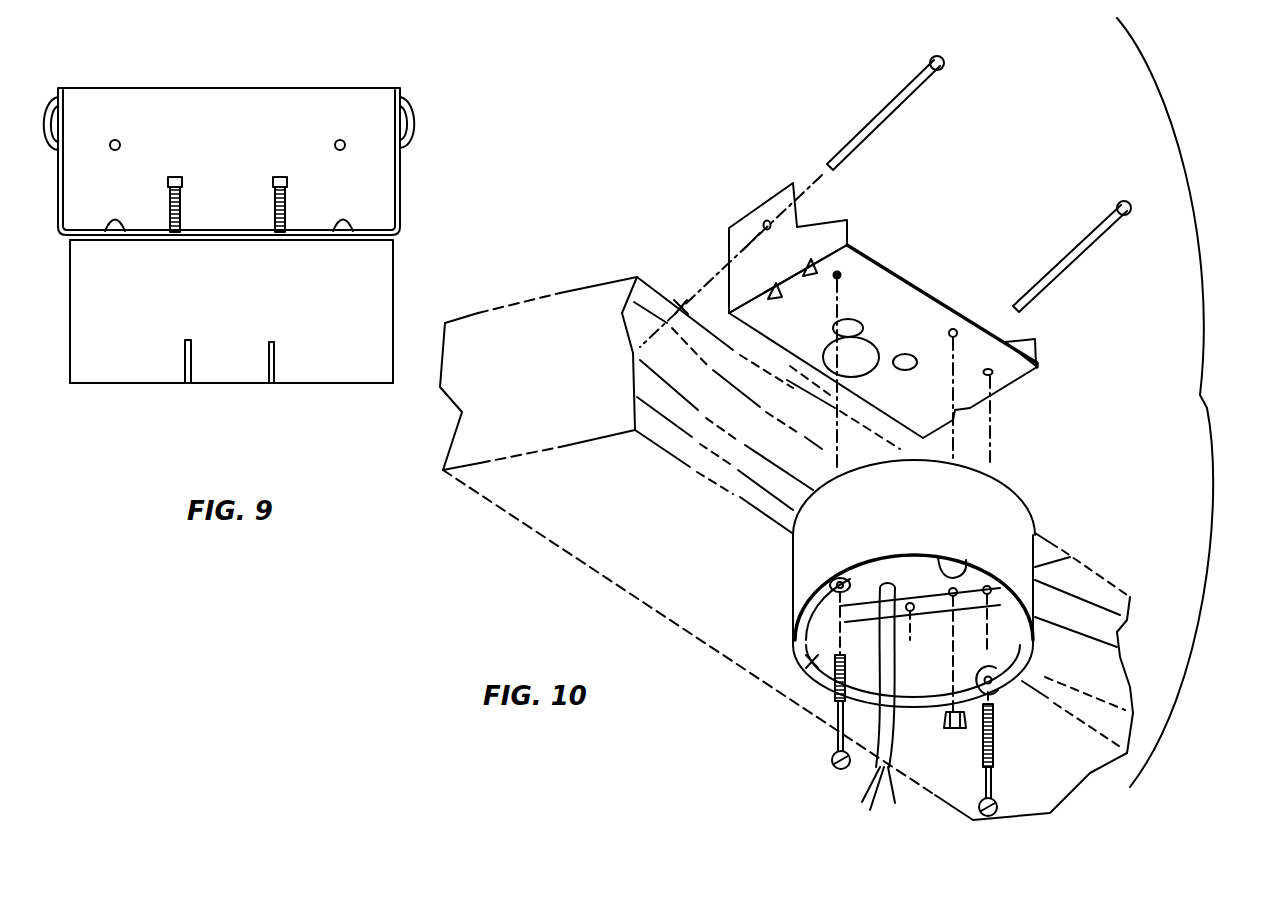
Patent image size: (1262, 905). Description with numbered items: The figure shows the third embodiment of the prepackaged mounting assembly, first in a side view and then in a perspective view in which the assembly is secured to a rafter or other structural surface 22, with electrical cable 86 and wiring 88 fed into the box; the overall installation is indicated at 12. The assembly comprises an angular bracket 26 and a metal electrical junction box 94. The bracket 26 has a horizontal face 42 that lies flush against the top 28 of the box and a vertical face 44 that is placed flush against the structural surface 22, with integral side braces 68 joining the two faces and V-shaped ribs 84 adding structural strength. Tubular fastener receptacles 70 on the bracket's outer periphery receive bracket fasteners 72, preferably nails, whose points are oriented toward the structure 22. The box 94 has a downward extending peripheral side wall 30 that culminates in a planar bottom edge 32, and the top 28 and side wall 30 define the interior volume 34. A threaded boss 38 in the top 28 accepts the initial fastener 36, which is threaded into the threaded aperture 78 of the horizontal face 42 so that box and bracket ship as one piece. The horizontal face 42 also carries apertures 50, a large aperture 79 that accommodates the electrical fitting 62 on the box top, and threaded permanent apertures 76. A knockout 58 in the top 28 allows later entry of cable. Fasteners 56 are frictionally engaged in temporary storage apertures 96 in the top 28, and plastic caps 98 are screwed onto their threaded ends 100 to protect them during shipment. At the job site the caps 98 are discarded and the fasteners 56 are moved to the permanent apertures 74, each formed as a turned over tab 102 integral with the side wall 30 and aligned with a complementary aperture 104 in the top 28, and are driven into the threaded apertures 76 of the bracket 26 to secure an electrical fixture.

In FIG. 10, the wall assembly 12 is at (1185, 402).
In FIG. 10, the structural surface 22 is at (682, 391).
In FIG. 9, the angular bracket 26 is at (323, 88).
In FIG. 10, the angular bracket 26 is at (940, 292).
In FIG. 10, the top 28 is at (1022, 484).
In FIG. 9, the peripheral side wall 30 is at (310, 306).
In FIG. 10, the peripheral side wall 30 is at (898, 517).
In FIG. 9, the planar bottom edge 32 is at (362, 384).
In FIG. 10, the planar bottom edge 32 is at (1036, 652).
In FIG. 10, the interior volume 34 is at (802, 678).
In FIG. 10, the initial fastener 36 is at (948, 727).
In FIG. 10, the threaded boss 38 is at (951, 592).
In FIG. 10, the horizontal face 42 is at (895, 406).
In FIG. 9, the vertical face 44 is at (175, 129).
In FIG. 10, the vertical face 44 is at (728, 242).
In FIG. 10, the apertures 50 is at (907, 353).
In FIG. 9, the fastener 56 is at (210, 185).
In FIG. 10, the fastener 56 is at (835, 728).
In FIG. 10, the knockout 58 is at (955, 558).
In FIG. 10, the electrical fitting 62 is at (878, 553).
In FIG. 10, the side braces 68 is at (850, 226).
In FIG. 9, the tubular fastener receptacles 70 is at (47, 126).
In FIG. 10, the tubular fastener receptacles 70 is at (750, 236).
In FIG. 10, the bracket fasteners 72 is at (943, 60).
In FIG. 10, the permanent aperture 74 is at (829, 585).
In FIG. 10, the permanent aperture 76 is at (834, 284).
In FIG. 10, the additional aperture 78 is at (957, 328).
In FIG. 10, the large aperture 79 is at (835, 334).
In FIG. 9, the V-shaped ribs 84 is at (115, 236).
In FIG. 10, the cable 86 is at (890, 782).
In FIG. 10, the wires 88 is at (866, 792).
In FIG. 9, the electrical junction box 94 is at (70, 327).
In FIG. 10, the electrical junction box 94 is at (1070, 557).
In FIG. 10, the apertures 96 is at (846, 614).
In FIG. 9, the caps 98 is at (175, 177).
In FIG. 9, the threaded ends 100 is at (280, 177).
In FIG. 10, the turned over tab 102 is at (831, 568).
In FIG. 10, the complementary aperture 104 is at (1035, 613).